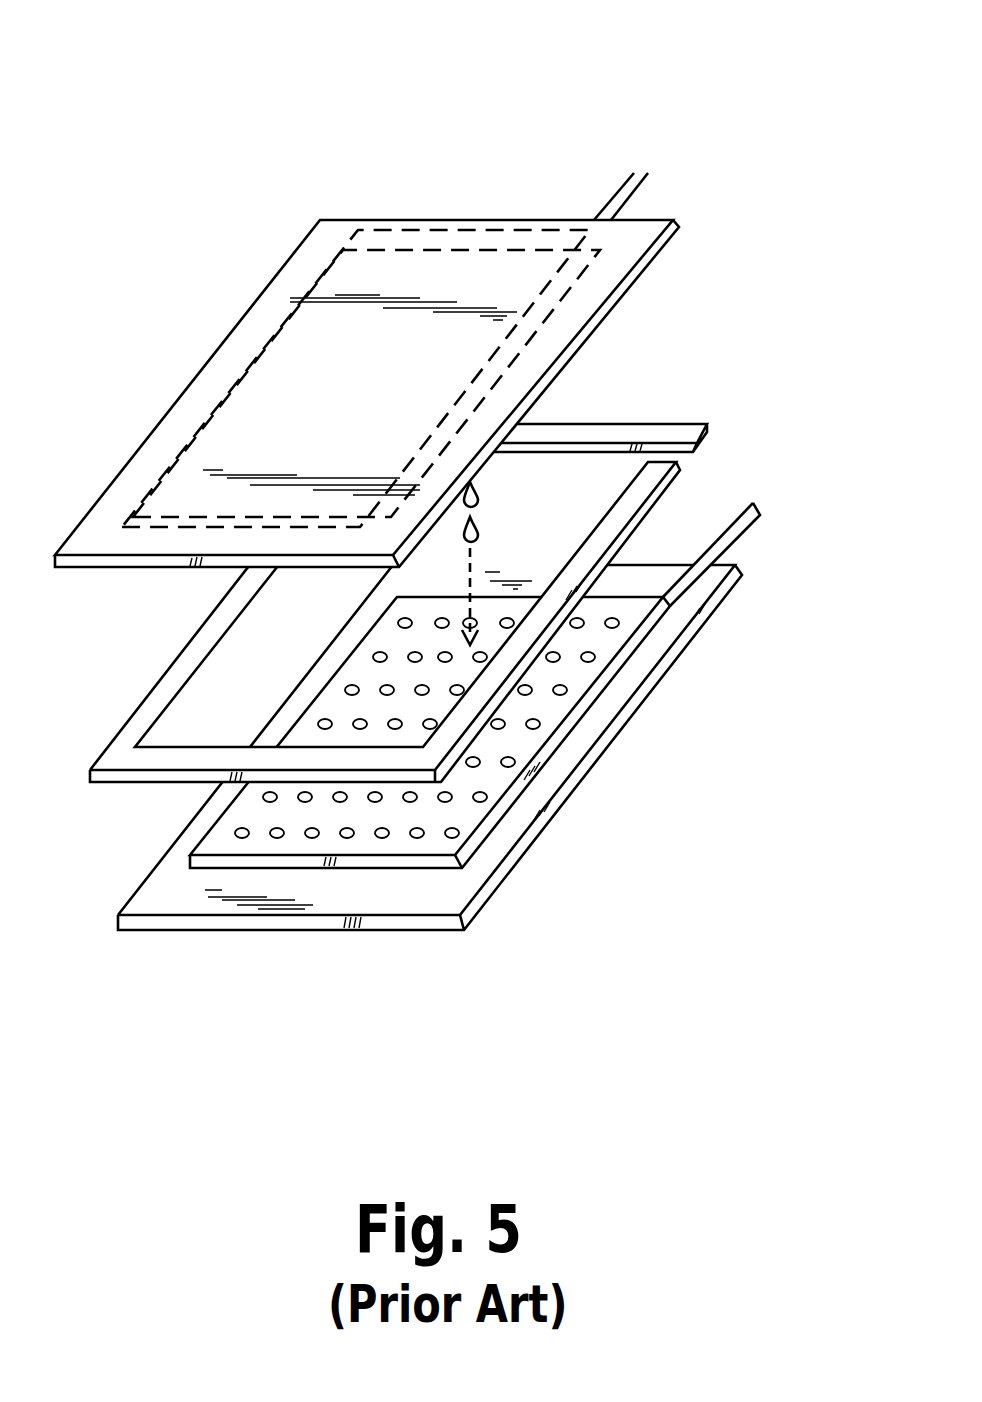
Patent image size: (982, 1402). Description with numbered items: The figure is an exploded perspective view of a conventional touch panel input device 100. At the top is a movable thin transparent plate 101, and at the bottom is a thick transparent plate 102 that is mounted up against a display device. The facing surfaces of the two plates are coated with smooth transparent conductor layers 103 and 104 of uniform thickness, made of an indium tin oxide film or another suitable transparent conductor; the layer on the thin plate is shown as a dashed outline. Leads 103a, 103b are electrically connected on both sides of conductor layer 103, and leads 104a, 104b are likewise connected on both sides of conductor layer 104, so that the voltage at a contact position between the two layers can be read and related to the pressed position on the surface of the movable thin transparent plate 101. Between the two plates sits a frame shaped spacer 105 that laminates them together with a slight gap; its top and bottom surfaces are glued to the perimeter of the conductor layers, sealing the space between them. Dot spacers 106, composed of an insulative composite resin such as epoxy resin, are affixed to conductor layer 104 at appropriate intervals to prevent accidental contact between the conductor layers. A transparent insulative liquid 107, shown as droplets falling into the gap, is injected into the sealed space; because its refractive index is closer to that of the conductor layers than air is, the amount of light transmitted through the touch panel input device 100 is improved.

The touch panel input device 100 is at (463, 523).
The movable thin transparent plate 101 is at (367, 393).
The thick transparent plate 102 is at (430, 805).
The smooth transparent conductor layer 103 is at (334, 378).
The lead 103a is at (573, 153).
The lead 103b is at (696, 174).
The smooth transparent conductor layer 104 is at (511, 704).
The lead 104a is at (743, 494).
The lead 104b is at (771, 554).
The frame shaped spacer 105 is at (556, 393).
The dot spacers 106 is at (384, 804).
The transparent insulative liquid 107 is at (516, 554).